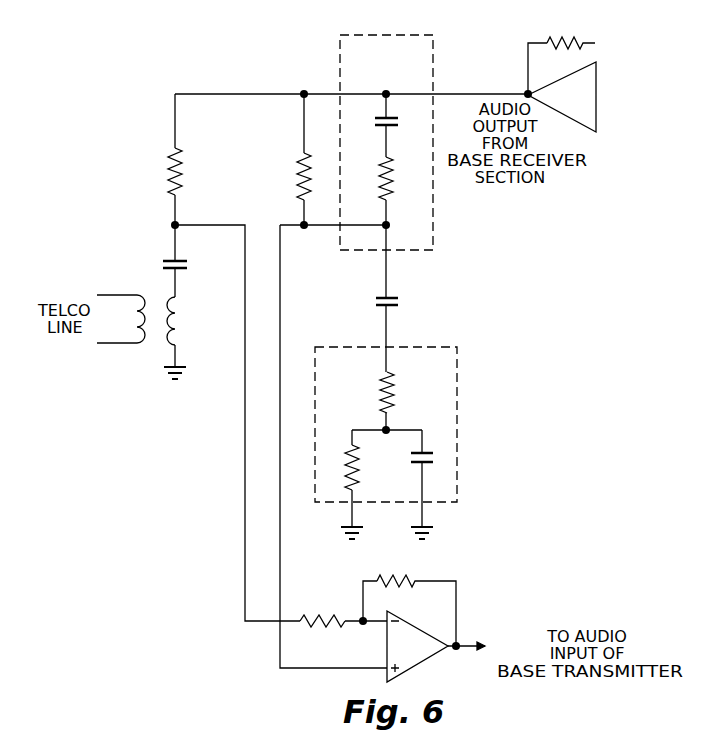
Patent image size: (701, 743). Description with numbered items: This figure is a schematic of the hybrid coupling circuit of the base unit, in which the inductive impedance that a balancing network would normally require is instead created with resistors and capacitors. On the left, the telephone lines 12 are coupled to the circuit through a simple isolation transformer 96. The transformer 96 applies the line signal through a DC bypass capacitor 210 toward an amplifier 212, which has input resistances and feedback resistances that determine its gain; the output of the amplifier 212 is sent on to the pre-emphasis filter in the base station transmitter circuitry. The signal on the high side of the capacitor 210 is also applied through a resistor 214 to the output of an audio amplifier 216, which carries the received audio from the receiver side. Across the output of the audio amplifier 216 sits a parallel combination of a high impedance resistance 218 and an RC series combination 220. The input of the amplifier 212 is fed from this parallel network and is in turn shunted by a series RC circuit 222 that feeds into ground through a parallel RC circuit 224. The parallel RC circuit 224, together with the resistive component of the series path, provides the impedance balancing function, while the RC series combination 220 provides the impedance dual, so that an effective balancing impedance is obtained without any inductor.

The telephone lines 12 is at (107, 295).
The isolation transformer 96 is at (153, 355).
The DC bypass capacitor 210 is at (170, 258).
The amplifier 212 is at (415, 667).
The resistor 214 is at (182, 165).
The audio amplifier 216 is at (597, 96).
The high impedance resistance 218 is at (300, 157).
The RC series combination 220 is at (392, 130).
The series RC circuit 222 is at (393, 307).
The parallel RC circuit 224 is at (389, 431).